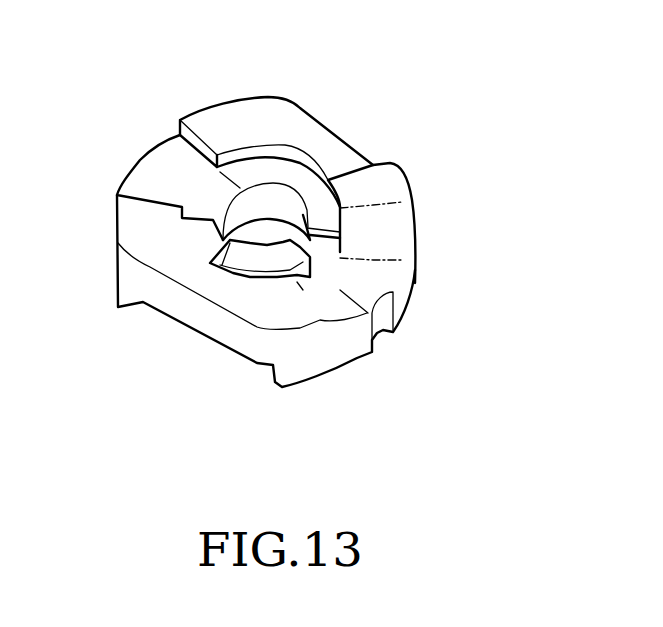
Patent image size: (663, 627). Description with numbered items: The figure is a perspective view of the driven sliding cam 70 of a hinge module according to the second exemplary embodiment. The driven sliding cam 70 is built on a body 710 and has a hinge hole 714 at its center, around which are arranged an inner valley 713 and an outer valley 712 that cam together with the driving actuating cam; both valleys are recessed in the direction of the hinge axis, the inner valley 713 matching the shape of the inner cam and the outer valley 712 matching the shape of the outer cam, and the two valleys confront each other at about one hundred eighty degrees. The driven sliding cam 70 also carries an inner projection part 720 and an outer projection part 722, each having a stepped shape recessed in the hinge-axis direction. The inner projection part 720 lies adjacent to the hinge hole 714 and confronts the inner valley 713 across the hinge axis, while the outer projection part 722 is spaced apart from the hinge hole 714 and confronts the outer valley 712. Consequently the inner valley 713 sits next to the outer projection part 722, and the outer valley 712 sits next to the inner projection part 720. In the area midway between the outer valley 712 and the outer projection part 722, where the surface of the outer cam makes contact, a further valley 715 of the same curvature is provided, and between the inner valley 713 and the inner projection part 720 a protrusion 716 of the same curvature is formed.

The driven sliding cam 70 is at (438, 183).
The body 710 is at (323, 355).
The outer valley 712 is at (368, 283).
The inner valley 713 is at (210, 212).
The hinge hole 714 is at (273, 232).
The valley 715 is at (350, 163).
The protrusion 716 is at (272, 258).
The inner projection part 720 is at (307, 265).
The outer projection part 722 is at (153, 173).